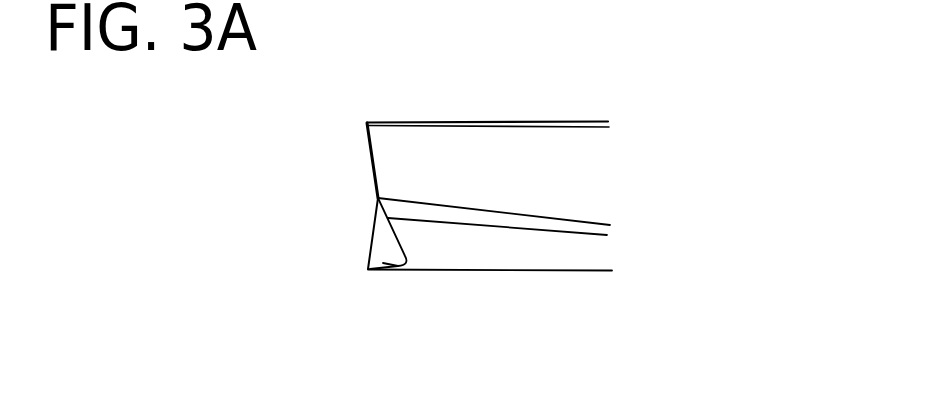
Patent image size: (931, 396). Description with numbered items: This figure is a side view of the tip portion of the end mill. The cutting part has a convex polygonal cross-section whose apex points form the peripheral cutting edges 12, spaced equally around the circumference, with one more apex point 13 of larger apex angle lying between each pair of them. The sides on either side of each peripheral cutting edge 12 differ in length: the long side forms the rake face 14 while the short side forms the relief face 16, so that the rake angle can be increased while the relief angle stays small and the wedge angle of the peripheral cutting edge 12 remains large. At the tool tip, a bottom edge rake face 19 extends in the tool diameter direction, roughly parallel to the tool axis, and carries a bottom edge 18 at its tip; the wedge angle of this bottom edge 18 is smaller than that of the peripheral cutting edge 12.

The peripheral cutting edge 12 is at (415, 198).
The apex point 13 is at (553, 233).
The rake face 14 is at (492, 157).
The relief face 16 is at (470, 217).
The bottom edge 18 is at (372, 237).
The bottom edge rake face 19 is at (383, 257).